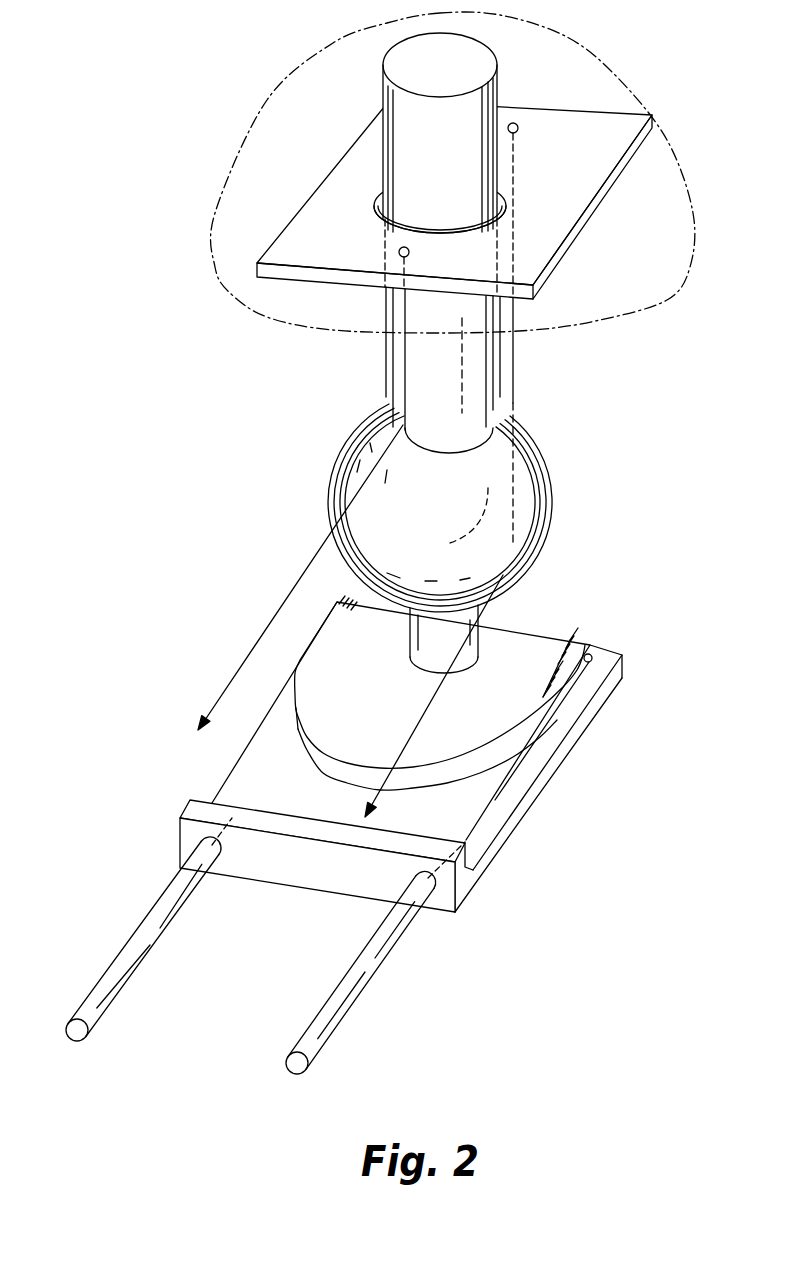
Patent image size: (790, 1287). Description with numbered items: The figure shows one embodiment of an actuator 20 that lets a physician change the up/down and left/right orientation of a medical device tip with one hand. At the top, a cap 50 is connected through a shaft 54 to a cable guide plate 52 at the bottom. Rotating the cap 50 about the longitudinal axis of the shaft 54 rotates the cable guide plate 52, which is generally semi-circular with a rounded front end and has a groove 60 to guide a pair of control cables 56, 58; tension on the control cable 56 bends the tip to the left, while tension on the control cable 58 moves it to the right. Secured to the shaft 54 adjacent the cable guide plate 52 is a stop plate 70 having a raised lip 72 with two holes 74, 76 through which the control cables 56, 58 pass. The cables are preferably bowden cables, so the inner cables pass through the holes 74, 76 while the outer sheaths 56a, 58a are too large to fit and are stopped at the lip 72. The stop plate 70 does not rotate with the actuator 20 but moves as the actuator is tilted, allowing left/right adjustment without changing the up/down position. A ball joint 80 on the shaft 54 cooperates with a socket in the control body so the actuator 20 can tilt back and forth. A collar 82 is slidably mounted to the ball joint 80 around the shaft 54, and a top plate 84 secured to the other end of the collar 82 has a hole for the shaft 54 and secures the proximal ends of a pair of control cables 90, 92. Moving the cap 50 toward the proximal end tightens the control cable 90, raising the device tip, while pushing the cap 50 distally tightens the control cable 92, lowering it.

The actuator 20 is at (158, 93).
The cap 50 is at (598, 55).
The top plate 84 is at (282, 273).
The collar 82 is at (386, 361).
The control cable 92 is at (513, 361).
The ball joint 80 is at (555, 484).
The shaft 54 is at (490, 622).
The cable guide plate 52 is at (548, 638).
The groove 60 is at (570, 700).
The control cable 56 is at (483, 806).
The stop plate 70 is at (480, 867).
The control cable 58 is at (296, 844).
The raised lip 72 is at (292, 873).
The hole 74 is at (132, 929).
The outer sheath 58a is at (127, 940).
The hole 76 is at (379, 973).
The outer sheath 56a is at (317, 1053).
The control cable 90 is at (247, 657).